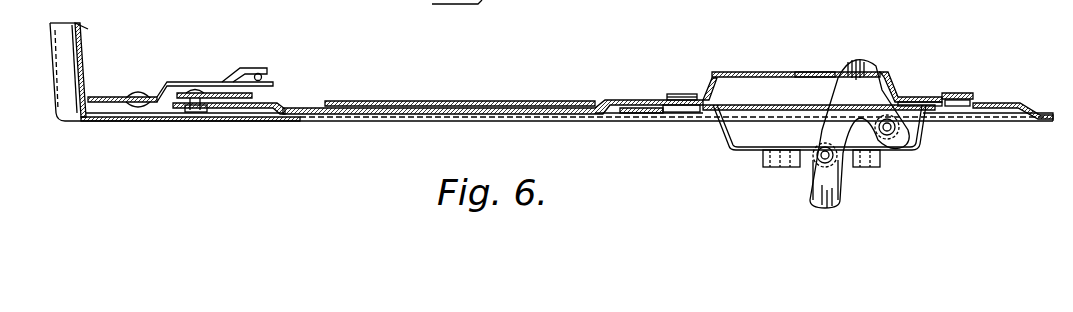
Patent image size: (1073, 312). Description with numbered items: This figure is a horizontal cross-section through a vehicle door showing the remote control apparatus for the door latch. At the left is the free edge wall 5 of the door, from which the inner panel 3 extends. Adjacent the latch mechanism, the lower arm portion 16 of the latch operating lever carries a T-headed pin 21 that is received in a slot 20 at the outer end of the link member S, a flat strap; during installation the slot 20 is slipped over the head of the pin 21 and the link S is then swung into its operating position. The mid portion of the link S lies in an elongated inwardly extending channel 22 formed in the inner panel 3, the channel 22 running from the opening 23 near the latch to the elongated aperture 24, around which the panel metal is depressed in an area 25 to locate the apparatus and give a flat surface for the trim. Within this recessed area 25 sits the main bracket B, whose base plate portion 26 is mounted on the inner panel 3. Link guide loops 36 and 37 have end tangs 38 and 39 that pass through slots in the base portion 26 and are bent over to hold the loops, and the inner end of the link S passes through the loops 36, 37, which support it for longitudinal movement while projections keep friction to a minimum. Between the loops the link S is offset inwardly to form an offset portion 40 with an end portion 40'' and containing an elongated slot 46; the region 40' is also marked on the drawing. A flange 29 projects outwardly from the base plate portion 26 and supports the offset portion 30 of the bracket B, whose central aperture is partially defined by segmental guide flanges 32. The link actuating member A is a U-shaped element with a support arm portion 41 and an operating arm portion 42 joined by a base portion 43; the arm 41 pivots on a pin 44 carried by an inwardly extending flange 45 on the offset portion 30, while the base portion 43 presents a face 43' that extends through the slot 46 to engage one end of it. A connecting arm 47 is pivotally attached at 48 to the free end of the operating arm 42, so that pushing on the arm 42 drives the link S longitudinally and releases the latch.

The free edge wall 5 is at (78, 68).
The inner panel 3 is at (103, 121).
The lower arm portion 16 is at (208, 93).
The T-headed pin 21 is at (193, 112).
The slot 20 is at (222, 108).
The opening 23 is at (297, 121).
The link member S is at (330, 106).
The channel 22 is at (410, 101).
The depressed area 25 is at (634, 117).
The link guide loop 36 is at (674, 94).
The end tang 38 is at (672, 113).
The end portion of offset 40'' is at (698, 68).
The offset portion 40 is at (796, 56).
The elongated slot 46 is at (802, 72).
The cover end flange 40' is at (911, 69).
The arm portion 41 is at (920, 100).
The link guide loop 37 is at (962, 93).
The elongated aperture 24 is at (1000, 103).
The flange 29 is at (725, 138).
The main bracket B is at (748, 148).
The guide flange 32 is at (772, 167).
The arm portion 42 is at (828, 125).
The link actuating member A is at (837, 80).
The base portion 43 is at (863, 35).
The face 43' is at (872, 54).
The pivot 48 is at (818, 162).
The connecting arm 47 is at (830, 208).
The pin 44 is at (888, 137).
The offset portion 30 is at (905, 140).
The flange 45 is at (910, 135).
The base plate portion 26 is at (940, 112).
The end tang 39 is at (963, 113).